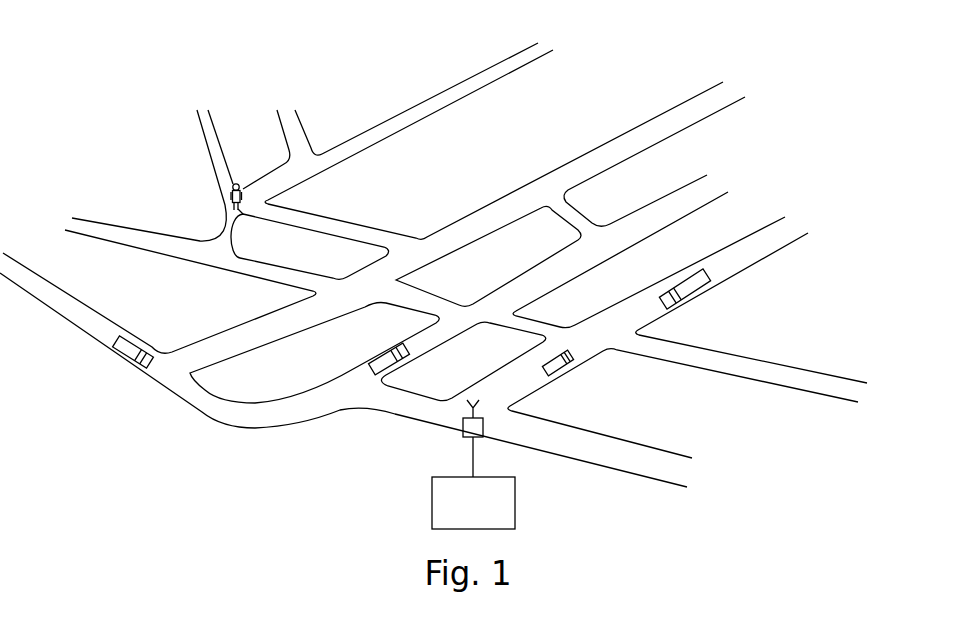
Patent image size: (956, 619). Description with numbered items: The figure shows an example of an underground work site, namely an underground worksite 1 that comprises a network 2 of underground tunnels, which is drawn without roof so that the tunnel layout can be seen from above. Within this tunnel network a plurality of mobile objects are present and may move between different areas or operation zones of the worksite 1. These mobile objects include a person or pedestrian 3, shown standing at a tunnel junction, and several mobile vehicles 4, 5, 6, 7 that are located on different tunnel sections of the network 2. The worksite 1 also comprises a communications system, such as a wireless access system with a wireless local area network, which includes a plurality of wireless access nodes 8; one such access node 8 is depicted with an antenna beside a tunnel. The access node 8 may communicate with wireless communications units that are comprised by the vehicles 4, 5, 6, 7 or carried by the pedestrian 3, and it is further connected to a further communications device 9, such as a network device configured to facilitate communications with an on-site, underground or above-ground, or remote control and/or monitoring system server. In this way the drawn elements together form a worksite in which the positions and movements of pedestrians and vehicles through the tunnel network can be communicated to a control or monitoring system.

The underground worksite 1 is at (314, 66).
The network of underground tunnels 2 is at (353, 228).
The pedestrian 3 is at (228, 196).
The mobile vehicle 4 is at (374, 369).
The mobile vehicle 5 is at (114, 355).
The mobile vehicle 6 is at (678, 296).
The mobile vehicle 7 is at (567, 366).
The wireless access node 8 is at (463, 433).
The further communications device 9 is at (465, 518).